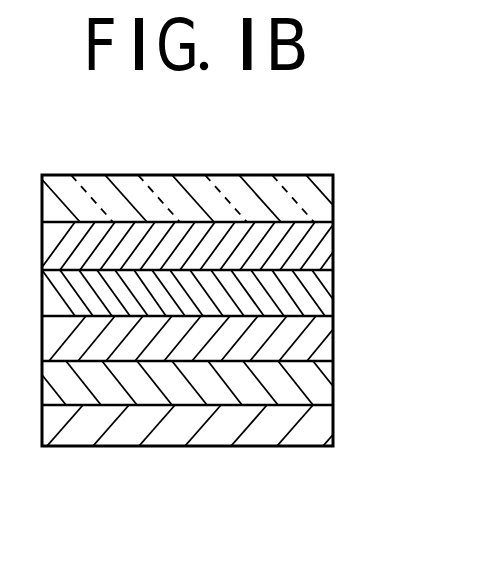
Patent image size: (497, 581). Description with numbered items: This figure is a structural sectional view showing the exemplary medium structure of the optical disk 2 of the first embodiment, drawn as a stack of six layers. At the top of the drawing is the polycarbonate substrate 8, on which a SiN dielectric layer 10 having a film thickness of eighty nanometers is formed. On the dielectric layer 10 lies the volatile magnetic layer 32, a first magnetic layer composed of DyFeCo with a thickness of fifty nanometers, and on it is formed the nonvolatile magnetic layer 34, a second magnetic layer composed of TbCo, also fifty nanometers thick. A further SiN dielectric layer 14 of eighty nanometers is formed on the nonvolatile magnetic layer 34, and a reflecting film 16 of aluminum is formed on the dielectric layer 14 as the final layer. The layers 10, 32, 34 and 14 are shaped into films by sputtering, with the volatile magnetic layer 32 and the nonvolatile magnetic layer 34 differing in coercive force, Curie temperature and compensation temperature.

The optical disk 2 is at (175, 176).
The polycarbonate substrate 8 is at (333, 203).
The SiN dielectric layer 10 is at (333, 250).
The volatile magnetic layer 32 is at (333, 295).
The nonvolatile magnetic layer 34 is at (333, 336).
The SiN dielectric layer 14 is at (333, 381).
The reflecting film 16 is at (333, 425).